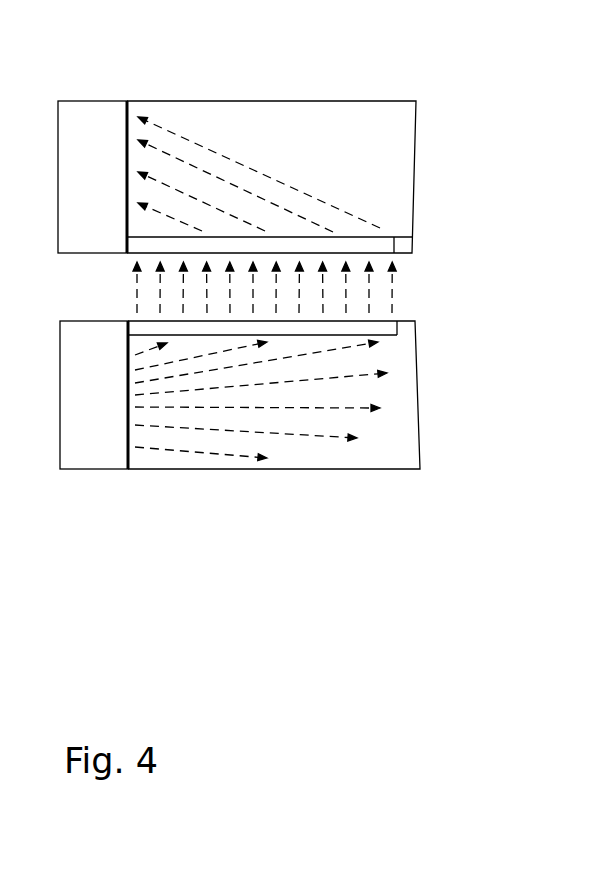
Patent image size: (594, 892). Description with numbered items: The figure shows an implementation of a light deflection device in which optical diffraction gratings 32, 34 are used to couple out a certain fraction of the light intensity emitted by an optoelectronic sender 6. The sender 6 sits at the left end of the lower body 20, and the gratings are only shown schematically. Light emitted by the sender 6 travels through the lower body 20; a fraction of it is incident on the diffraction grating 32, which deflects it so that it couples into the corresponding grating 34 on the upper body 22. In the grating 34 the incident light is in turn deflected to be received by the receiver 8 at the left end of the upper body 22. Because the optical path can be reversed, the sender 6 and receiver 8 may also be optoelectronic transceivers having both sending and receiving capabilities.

The receiver 8 is at (88, 123).
The second substrate 22 is at (363, 170).
The optical diffraction grating 34 is at (378, 245).
The optoelectronic sender 6 is at (93, 458).
The first substrate 20 is at (400, 447).
The optical diffraction grating 32 is at (385, 322).